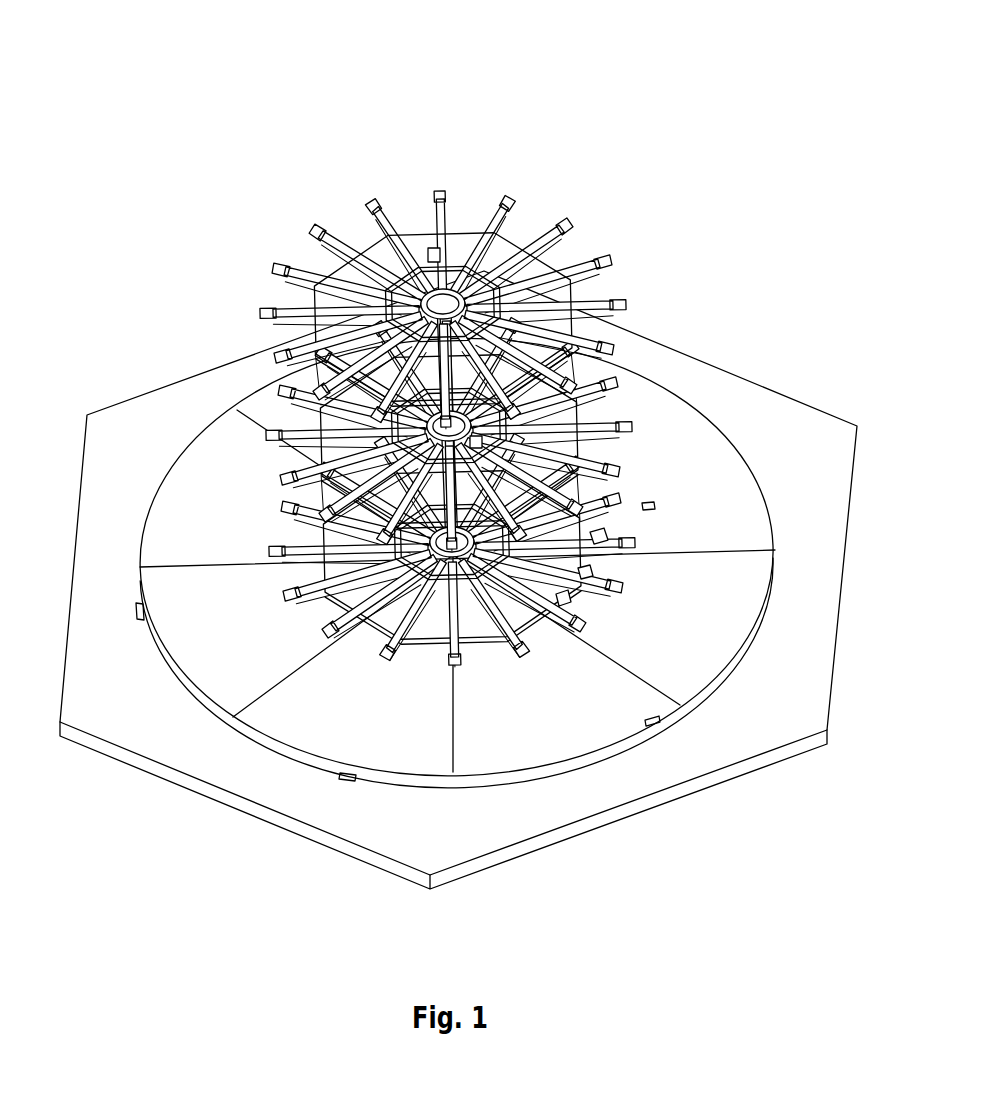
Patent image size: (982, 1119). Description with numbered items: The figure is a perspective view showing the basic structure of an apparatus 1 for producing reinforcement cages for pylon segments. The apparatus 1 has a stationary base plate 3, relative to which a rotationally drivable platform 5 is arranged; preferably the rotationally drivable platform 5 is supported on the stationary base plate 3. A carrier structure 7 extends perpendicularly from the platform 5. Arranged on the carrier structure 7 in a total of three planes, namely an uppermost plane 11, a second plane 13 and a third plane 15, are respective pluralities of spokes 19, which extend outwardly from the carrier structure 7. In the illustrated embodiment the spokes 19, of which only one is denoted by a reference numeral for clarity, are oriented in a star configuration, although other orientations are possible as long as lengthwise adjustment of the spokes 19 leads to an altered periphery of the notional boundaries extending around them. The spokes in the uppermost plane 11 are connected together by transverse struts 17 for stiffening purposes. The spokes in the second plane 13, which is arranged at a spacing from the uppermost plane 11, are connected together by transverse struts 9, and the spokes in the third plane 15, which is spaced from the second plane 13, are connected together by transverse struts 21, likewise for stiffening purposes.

The apparatus 1 is at (469, 452).
The stationary base plate 3 is at (157, 422).
The rotationally drivable platform 5 is at (192, 535).
The carrier structure 7 is at (450, 375).
The transverse struts 9 is at (475, 441).
The uppermost plane 11 is at (292, 243).
The second plane 13 is at (285, 414).
The third plane 15 is at (268, 585).
The transverse struts 17 is at (433, 245).
The spokes 19 is at (597, 537).
The transverse struts 21 is at (585, 575).